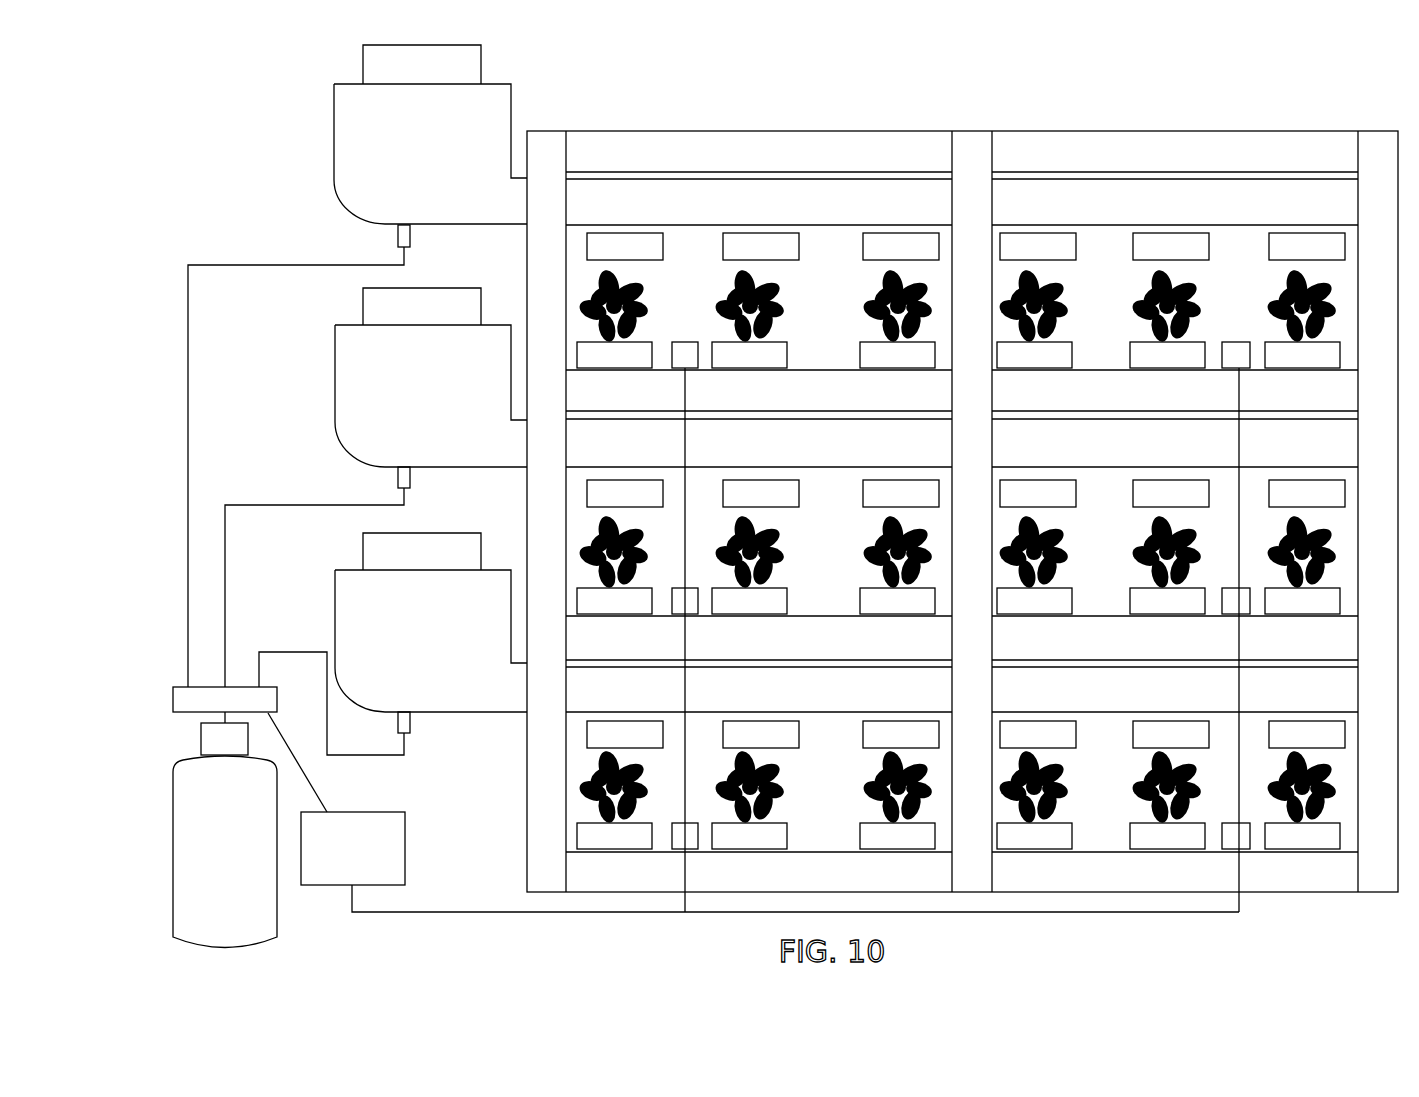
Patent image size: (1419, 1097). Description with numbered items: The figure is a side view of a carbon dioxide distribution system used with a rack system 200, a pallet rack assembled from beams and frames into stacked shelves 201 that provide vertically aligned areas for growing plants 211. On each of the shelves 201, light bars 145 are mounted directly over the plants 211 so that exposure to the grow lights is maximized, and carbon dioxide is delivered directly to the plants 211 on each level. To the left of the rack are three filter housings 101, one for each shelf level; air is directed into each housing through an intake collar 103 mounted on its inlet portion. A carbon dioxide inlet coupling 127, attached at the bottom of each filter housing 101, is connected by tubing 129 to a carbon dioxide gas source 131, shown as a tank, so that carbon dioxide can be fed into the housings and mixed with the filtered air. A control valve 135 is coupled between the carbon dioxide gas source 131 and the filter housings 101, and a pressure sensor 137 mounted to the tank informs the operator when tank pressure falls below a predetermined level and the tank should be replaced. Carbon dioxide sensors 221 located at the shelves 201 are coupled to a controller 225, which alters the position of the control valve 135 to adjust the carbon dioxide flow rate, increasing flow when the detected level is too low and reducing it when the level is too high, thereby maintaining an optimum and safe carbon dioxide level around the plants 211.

The filter housing 101 is at (358, 147).
The intake collar 103 is at (469, 69).
The carbon dioxide inlet coupling 127 is at (395, 235).
The tubing 129 is at (192, 337).
The carbon dioxide gas source 131 is at (258, 922).
The control valve 135 is at (192, 698).
The pressure sensor 137 is at (215, 740).
The light bar 145 is at (745, 245).
The rack system 200 is at (1057, 138).
The shelf 201 is at (853, 375).
The plant 211 is at (873, 307).
The carbon dioxide sensor 221 is at (683, 350).
The controller 225 is at (385, 832).